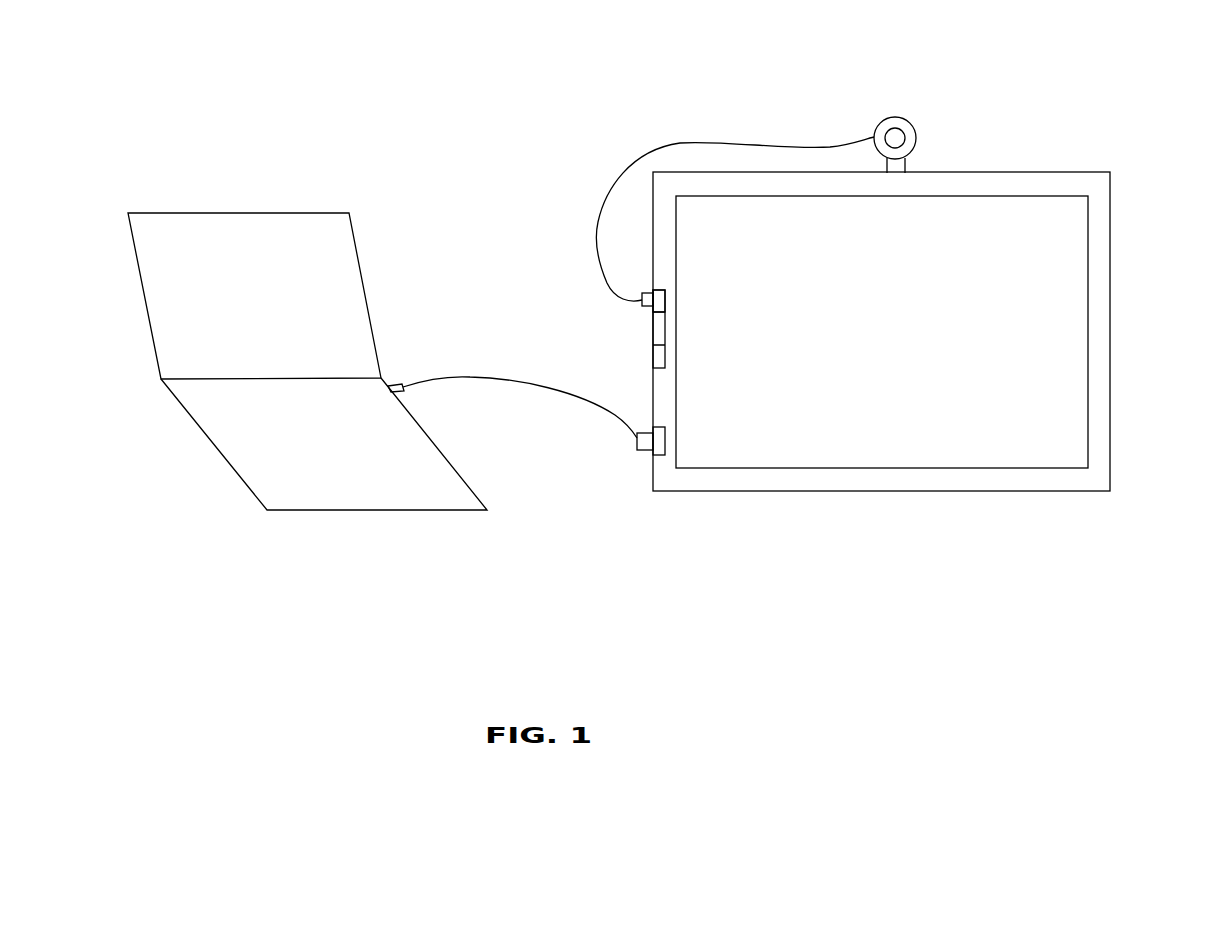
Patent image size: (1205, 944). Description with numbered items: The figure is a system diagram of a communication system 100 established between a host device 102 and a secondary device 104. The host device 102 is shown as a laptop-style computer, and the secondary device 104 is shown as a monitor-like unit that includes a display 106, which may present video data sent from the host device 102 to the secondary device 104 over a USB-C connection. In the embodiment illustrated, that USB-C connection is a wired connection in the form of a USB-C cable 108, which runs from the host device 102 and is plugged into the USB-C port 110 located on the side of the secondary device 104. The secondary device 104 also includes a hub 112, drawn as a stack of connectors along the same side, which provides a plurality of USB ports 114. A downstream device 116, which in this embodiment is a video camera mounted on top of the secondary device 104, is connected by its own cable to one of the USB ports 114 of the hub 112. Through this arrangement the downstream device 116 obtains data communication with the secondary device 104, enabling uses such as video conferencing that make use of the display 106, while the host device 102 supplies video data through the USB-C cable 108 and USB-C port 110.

The communication system 100 is at (489, 165).
The host device 102 is at (333, 460).
The secondary device 104 is at (858, 492).
The display 106 is at (937, 340).
The USB-C cable 108 is at (452, 377).
The USB-C port 110 is at (630, 450).
The hub 112 is at (645, 333).
The USB port 114 is at (665, 296).
The downstream device 116 is at (923, 126).